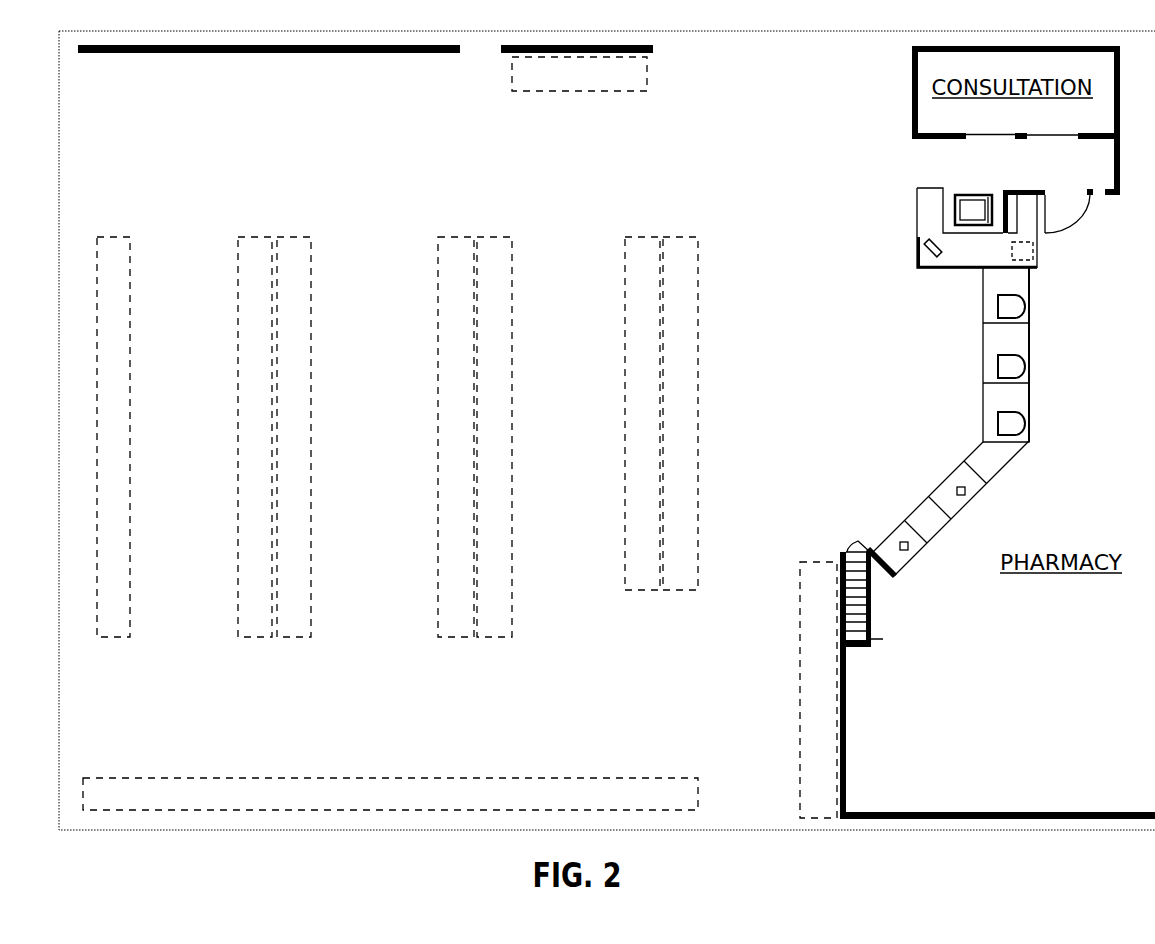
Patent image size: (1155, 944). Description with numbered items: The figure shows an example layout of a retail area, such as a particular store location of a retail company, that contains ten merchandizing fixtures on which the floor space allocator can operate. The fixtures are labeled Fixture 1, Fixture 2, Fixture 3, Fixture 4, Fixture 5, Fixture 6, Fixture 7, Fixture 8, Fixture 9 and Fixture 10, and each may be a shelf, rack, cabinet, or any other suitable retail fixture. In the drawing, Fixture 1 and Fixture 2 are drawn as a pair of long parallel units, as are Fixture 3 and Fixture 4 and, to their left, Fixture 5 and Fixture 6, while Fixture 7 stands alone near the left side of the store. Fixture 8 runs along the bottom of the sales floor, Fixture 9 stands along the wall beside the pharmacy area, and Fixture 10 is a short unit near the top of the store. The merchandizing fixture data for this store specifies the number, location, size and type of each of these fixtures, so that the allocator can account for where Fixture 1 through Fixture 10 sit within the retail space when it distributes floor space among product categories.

The Fixture 1 is at (684, 413).
The Fixture 2 is at (646, 413).
The Fixture 3 is at (499, 437).
The Fixture 4 is at (460, 437).
The Fixture 5 is at (298, 437).
The Fixture 6 is at (259, 437).
The Fixture 7 is at (118, 437).
The Fixture 8 is at (390, 794).
The Fixture 9 is at (820, 690).
The Fixture 10 is at (579, 74).